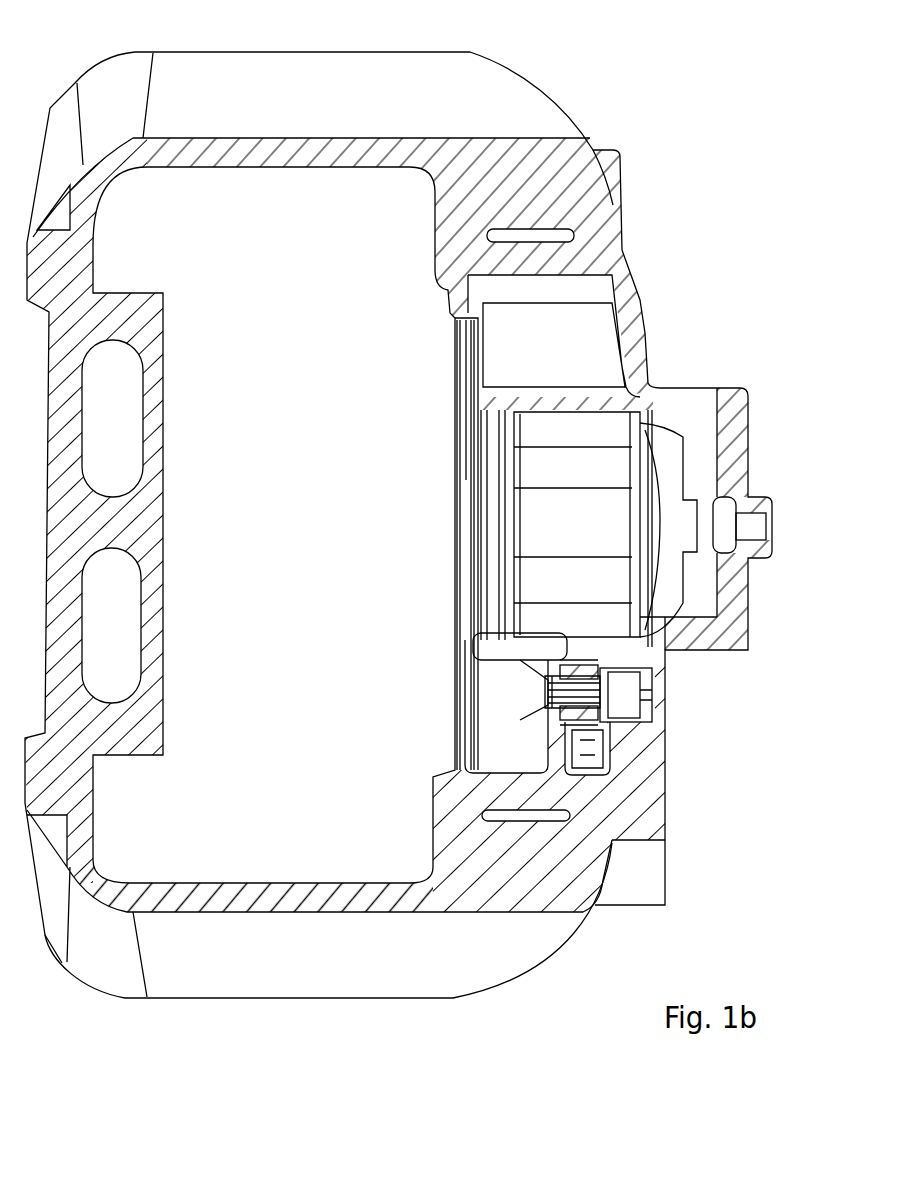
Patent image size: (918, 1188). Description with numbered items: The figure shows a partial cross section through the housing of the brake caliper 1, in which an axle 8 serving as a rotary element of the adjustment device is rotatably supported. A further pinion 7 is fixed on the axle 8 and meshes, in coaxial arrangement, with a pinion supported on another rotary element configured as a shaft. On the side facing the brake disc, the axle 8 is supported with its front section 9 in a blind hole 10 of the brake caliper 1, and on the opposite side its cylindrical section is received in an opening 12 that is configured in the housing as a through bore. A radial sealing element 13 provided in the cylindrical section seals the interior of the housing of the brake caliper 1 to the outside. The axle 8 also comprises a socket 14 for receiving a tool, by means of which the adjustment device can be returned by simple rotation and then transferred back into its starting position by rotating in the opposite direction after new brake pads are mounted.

The brake caliper 1 is at (458, 84).
The further pinion 7 is at (628, 605).
The axle 8 is at (543, 660).
The front section 9 is at (547, 712).
The blind hole 10 is at (543, 692).
The opening 12 is at (645, 722).
The radial sealing element 13 is at (613, 723).
The socket 14 is at (578, 692).